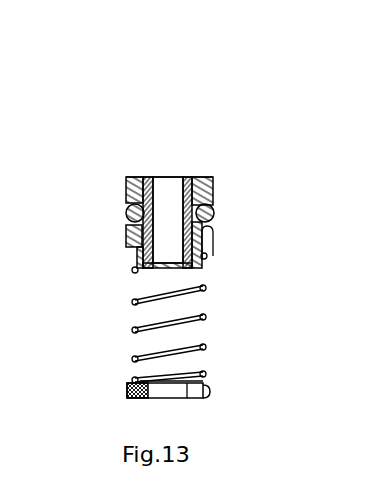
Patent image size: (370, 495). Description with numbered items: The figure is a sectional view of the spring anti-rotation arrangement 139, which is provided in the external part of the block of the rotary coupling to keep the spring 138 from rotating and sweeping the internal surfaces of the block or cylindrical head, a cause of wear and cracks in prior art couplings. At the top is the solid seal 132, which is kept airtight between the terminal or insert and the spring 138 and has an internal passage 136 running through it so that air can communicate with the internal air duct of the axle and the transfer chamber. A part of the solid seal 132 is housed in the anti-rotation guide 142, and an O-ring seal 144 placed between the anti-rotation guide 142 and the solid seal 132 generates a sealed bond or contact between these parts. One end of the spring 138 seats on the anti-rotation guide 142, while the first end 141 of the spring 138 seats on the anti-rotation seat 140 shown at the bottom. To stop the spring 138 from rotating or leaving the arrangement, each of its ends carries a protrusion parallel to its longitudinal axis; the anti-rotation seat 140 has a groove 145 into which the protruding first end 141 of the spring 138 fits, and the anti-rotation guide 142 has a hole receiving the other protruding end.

The anti-rotation arrangement 139 is at (152, 147).
The solid seal 132 is at (135, 177).
The internal passage 136 is at (168, 203).
The O-ring seal 144 is at (126, 212).
The anti-rotation guide 142 is at (127, 247).
The spring 138 is at (205, 288).
The groove 145 is at (170, 392).
The anti-rotation seat 140 is at (130, 400).
The first end 141 is at (207, 388).